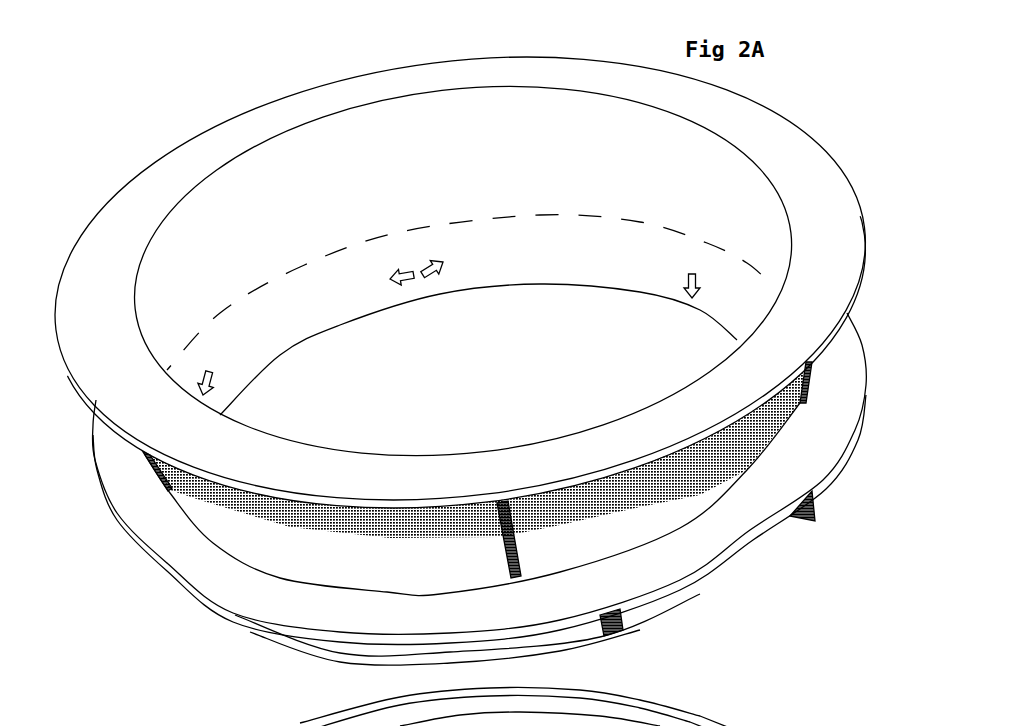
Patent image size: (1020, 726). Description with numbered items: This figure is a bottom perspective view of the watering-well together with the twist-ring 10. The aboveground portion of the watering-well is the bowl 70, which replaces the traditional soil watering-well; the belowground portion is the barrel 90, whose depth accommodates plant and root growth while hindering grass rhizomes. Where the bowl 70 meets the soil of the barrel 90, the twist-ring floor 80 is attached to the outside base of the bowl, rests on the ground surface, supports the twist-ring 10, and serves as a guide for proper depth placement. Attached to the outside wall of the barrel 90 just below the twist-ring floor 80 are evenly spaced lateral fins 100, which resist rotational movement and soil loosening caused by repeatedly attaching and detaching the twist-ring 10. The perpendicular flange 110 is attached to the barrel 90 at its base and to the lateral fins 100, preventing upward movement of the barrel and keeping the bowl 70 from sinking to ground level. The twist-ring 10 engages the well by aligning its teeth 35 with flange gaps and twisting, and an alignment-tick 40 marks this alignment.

The perpendicular flange 110 is at (212, 146).
The barrel 90 is at (246, 212).
The bowl 70 is at (298, 300).
The alignment-tick 40 is at (218, 379).
The twist-ring floor 80 is at (167, 540).
The lateral fin 100 is at (520, 548).
The teeth 35 is at (620, 627).
The twist-ring 10 is at (758, 725).